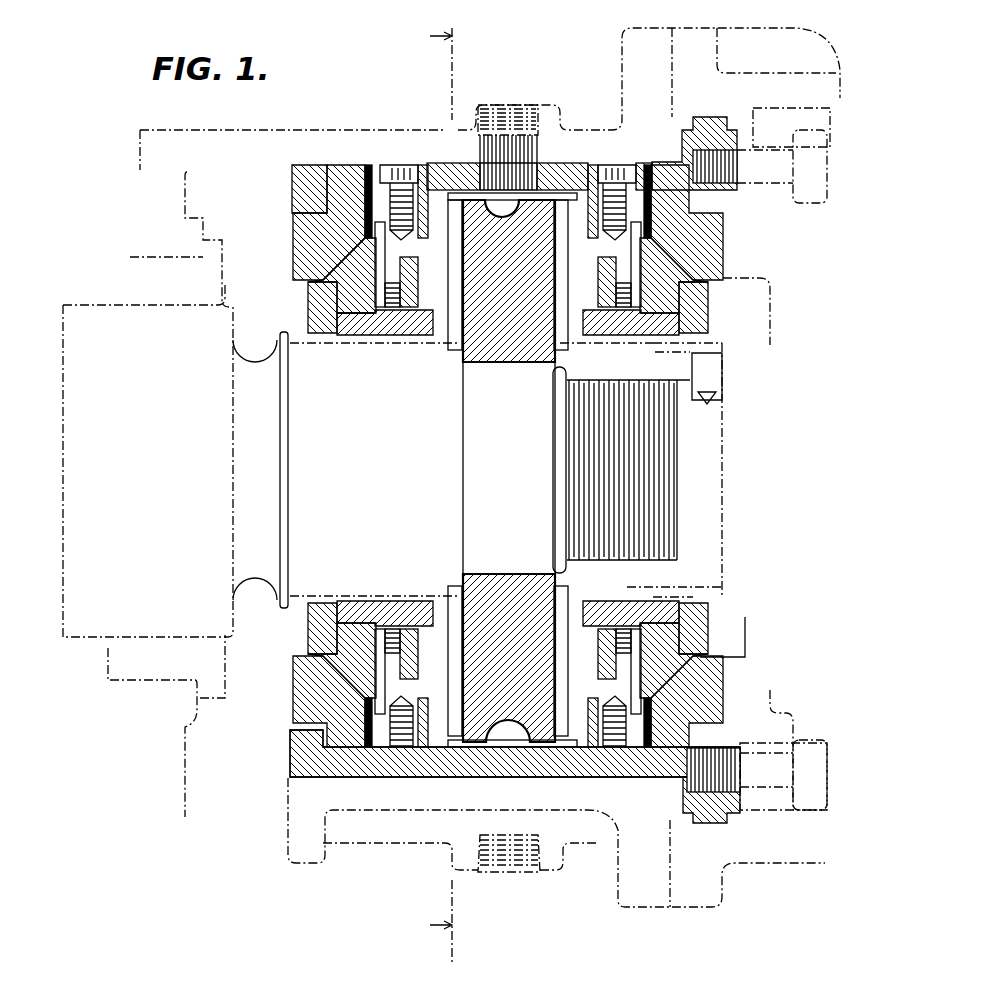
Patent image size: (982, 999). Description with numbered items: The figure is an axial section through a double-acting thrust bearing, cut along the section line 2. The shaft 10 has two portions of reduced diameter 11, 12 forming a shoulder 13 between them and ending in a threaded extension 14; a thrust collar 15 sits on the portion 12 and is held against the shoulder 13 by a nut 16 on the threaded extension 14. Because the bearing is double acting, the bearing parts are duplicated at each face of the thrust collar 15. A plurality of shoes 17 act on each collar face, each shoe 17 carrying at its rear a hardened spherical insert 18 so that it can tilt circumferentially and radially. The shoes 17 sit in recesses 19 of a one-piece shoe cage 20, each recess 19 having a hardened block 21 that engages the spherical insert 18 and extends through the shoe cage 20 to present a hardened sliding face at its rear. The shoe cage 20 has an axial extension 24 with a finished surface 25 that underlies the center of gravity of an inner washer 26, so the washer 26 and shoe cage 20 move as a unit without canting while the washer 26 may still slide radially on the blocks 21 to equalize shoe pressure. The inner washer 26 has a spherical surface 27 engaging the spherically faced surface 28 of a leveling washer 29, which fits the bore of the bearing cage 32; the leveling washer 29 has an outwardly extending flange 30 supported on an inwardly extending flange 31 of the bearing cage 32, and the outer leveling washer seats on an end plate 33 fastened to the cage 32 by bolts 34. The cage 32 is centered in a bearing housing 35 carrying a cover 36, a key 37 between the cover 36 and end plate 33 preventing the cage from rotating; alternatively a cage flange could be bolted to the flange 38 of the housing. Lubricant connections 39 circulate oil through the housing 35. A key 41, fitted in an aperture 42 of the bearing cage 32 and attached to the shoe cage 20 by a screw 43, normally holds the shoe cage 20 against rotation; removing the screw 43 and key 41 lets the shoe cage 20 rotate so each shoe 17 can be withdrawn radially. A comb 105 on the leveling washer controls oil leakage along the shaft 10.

The section line 2- 2 is at (452, 495).
The shaft 10 is at (108, 620).
The portion of reduced diameter 11 is at (307, 573).
The portion of reduced diameter 12 is at (497, 510).
The shoulder 13 is at (465, 590).
The threaded extension 14 is at (667, 453).
The thrust collar 15 is at (505, 352).
The nut 16 is at (628, 587).
The shoe 17 is at (445, 328).
The spherical insert 18 is at (402, 273).
The recess 19 is at (402, 277).
The shoe cage 20 is at (373, 328).
The hardened block 21 is at (385, 658).
The axial extension 24 is at (352, 330).
The finished surface 25 is at (330, 312).
The inner washer 26 is at (330, 638).
The spherical surface 27 is at (385, 685).
The spherically faced surface 28 is at (322, 274).
The leveling washer 29 is at (306, 271).
The outwardly extending flange 30 is at (327, 218).
The inwardly extending flange 31 is at (306, 187).
The bearing cage 32 is at (457, 157).
The end plate 33 is at (762, 220).
The bolt 34 is at (807, 170).
The bearing housing 35 is at (288, 142).
The cover 36 is at (712, 88).
The key 37 is at (778, 110).
The flange 38 is at (636, 90).
The lubricant connections 39 is at (502, 127).
The key 41 is at (378, 185).
The aperture 42 is at (437, 168).
The screw 43 is at (392, 205).
The comb 105 is at (415, 330).